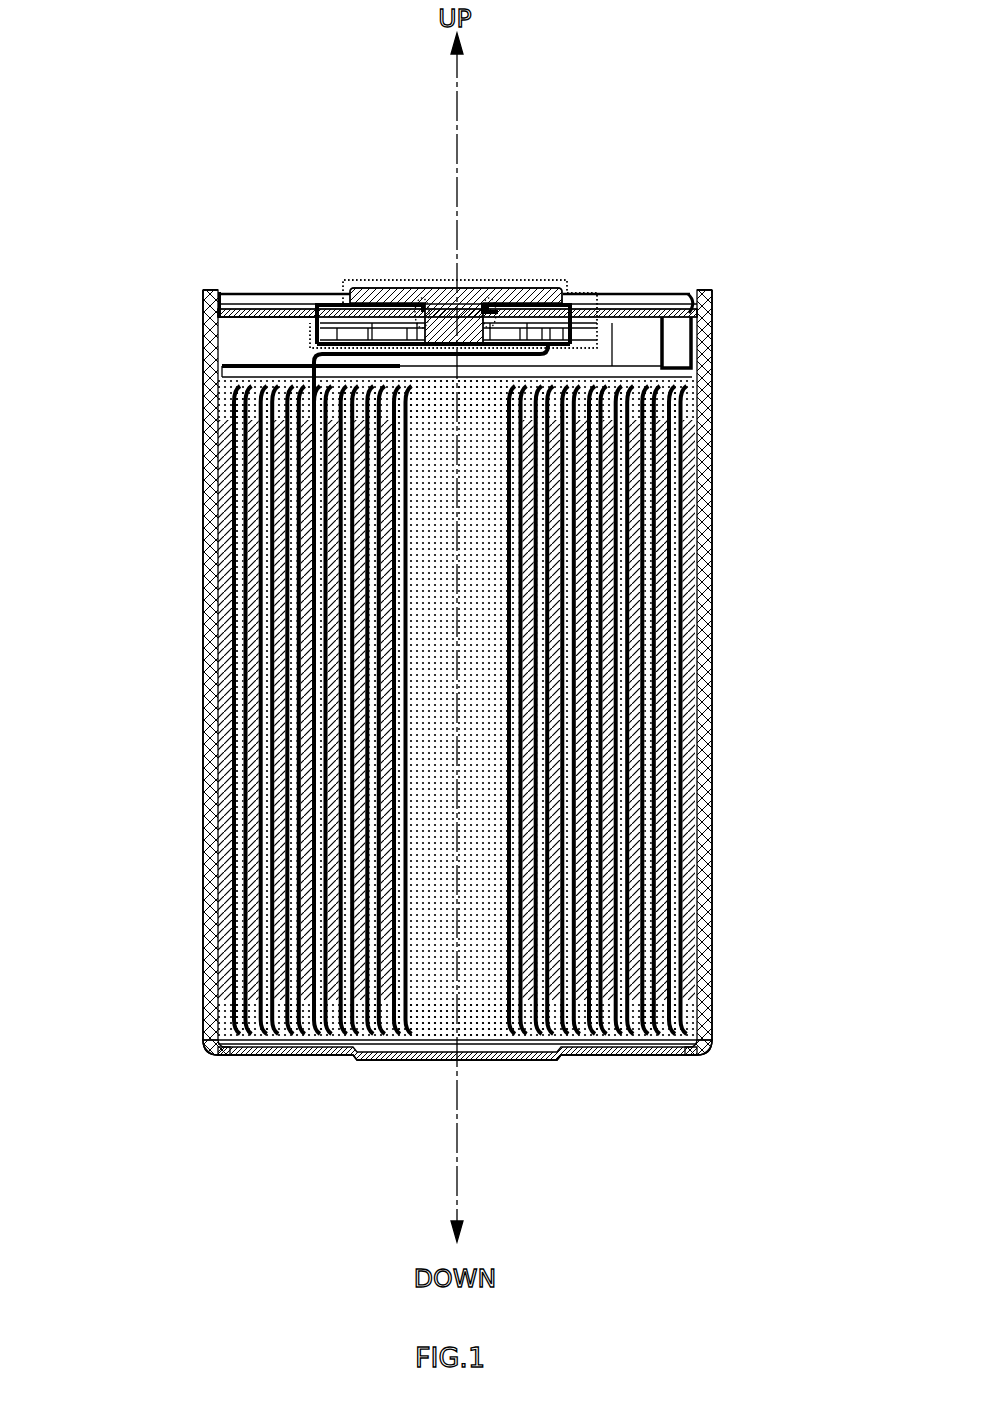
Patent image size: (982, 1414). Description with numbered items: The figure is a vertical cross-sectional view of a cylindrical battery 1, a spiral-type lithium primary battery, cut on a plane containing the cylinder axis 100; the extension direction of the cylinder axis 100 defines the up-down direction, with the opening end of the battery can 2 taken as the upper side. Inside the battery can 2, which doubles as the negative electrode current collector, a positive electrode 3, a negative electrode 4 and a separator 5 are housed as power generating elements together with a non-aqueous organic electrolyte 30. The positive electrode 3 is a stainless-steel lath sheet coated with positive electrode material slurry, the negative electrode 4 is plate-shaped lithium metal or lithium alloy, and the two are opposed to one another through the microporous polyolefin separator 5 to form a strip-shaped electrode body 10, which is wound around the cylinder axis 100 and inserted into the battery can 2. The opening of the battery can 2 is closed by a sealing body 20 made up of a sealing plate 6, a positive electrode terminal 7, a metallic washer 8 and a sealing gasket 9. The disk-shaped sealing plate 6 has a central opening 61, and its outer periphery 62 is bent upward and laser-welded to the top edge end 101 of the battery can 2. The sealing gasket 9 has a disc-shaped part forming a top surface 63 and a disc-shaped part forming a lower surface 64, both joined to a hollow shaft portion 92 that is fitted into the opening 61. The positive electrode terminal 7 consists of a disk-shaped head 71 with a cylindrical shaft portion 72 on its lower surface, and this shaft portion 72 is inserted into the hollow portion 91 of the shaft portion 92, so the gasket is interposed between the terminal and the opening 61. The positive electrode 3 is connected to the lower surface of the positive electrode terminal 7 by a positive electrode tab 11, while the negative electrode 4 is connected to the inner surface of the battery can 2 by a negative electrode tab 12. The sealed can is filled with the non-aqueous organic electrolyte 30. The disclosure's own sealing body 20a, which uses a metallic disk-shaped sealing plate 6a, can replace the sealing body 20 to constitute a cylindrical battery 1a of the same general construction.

The cylindrical battery 1 is at (200, 113).
The cylindrical battery 1a is at (457, 675).
The battery can 2 is at (208, 600).
The positive electrode 3 is at (237, 787).
The negative electrode 4 is at (225, 932).
The separator 5 is at (233, 1027).
The sealing plate 6 is at (282, 310).
The sealing plate 6a is at (457, 313).
The positive electrode terminal 7 is at (433, 197).
The metallic washer 8 is at (517, 333).
The sealing gasket 9 is at (316, 303).
The strip-shaped electrode body 10 is at (117, 1037).
The positive electrode tab 11 is at (312, 355).
The negative electrode tab 12 is at (692, 374).
The sealing body 20 is at (302, 300).
The sealing body 20a is at (453, 314).
The non-aqueous organic electrolyte 30 is at (482, 685).
The opening 61 is at (486, 304).
The outer periphery 62 is at (233, 300).
The top surface 63 is at (656, 298).
The lower surface 64 is at (258, 328).
The head 71 is at (372, 287).
The shaft portion 72 is at (442, 327).
The hollow portion 91 is at (467, 320).
The shaft portion 92 is at (417, 293).
The cylinder axis 100 is at (459, 160).
The top edge end 101 is at (210, 283).